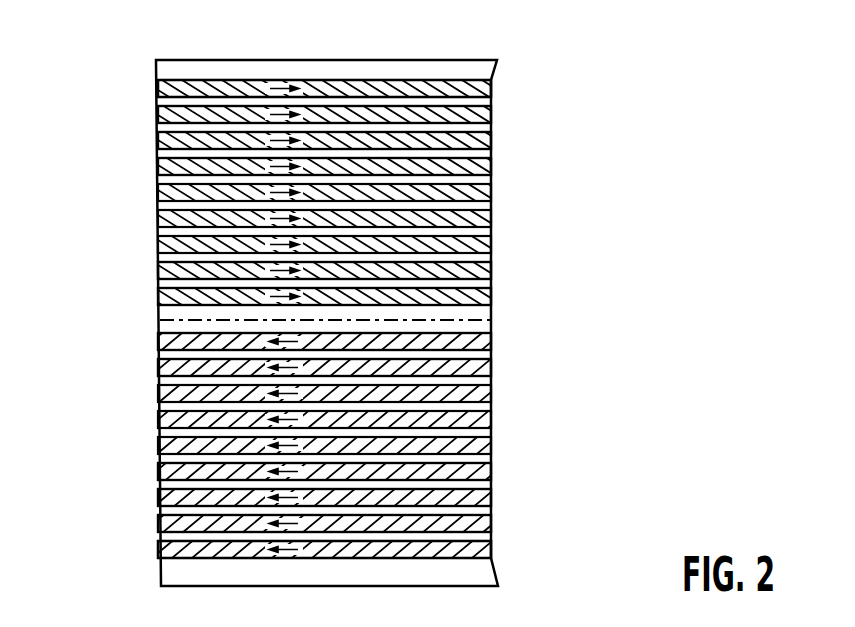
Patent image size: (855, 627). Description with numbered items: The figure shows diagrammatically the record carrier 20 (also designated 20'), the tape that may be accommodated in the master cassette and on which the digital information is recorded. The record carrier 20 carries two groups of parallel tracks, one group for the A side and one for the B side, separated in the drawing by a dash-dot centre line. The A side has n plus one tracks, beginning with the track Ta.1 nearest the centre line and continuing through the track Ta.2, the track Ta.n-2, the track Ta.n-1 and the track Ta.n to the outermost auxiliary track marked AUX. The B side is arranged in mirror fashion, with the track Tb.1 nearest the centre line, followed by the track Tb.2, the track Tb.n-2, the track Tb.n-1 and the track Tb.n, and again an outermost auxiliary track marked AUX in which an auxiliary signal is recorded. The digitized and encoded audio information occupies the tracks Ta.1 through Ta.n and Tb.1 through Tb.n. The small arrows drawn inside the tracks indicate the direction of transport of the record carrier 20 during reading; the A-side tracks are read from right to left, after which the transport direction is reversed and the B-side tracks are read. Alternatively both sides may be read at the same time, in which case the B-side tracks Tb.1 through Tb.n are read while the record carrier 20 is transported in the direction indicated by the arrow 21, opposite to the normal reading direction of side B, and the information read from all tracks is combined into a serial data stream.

The record carrier 20 is at (425, 304).
The record carrier 20' is at (327, 304).
The arrow 21 is at (231, 43).
The auxiliary track AUX is at (165, 86).
The track Tb.n is at (476, 115).
The track Tb.n-1 is at (474, 139).
The track Tb.n-2 is at (474, 167).
The track Tb.2 is at (474, 271).
The track Tb.1 is at (474, 297).
The track Ta.1 is at (476, 342).
The track Ta.2 is at (476, 368).
The track Ta.n-2 is at (477, 473).
The track Ta.n-1 is at (477, 498).
The track Ta.n is at (477, 524).